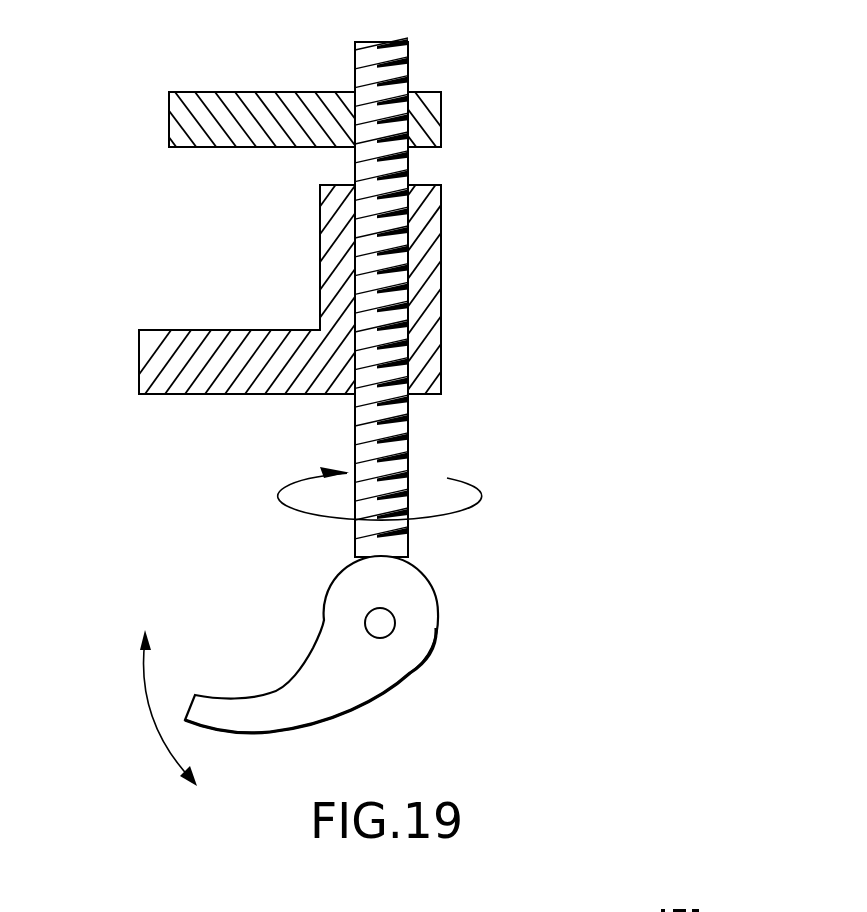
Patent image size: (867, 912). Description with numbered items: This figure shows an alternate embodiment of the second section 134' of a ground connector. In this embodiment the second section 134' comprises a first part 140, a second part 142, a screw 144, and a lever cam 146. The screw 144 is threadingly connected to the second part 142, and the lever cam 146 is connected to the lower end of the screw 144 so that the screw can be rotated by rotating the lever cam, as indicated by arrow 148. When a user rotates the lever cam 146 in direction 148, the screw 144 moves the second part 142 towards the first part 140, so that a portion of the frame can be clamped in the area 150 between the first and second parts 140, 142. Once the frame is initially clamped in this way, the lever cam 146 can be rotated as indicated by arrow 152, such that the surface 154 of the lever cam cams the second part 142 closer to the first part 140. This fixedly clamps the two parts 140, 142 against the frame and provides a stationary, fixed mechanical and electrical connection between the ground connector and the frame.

The second section 134' is at (659, 26).
The first part 140 is at (169, 118).
The second part 142 is at (139, 366).
The screw 144 is at (408, 47).
The lever cam 146 is at (413, 668).
The arrow 148 is at (482, 497).
The area 150 is at (216, 243).
The arrow 152 is at (148, 697).
The surface 154 is at (327, 582).